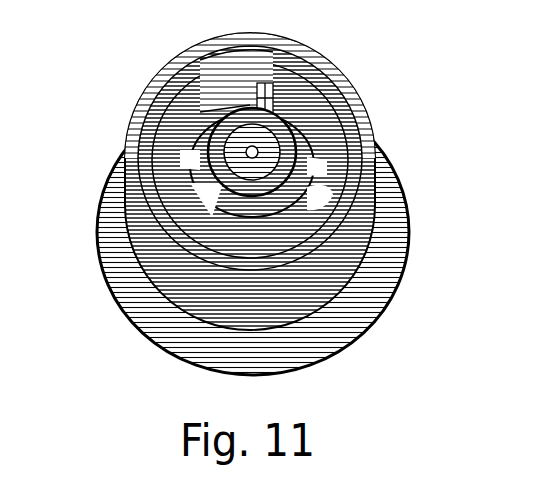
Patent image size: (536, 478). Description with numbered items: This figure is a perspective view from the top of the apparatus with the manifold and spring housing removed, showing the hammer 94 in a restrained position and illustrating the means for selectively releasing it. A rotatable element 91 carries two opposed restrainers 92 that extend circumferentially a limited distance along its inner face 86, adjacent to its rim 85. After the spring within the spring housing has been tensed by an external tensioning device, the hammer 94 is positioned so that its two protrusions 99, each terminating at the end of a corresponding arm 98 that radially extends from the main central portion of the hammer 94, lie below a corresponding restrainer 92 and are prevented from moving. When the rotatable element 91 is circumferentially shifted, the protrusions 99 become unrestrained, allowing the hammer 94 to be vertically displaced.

The rim 85 is at (172, 80).
The inner face 86 is at (175, 123).
The rotatable element 91 is at (353, 243).
The restrainer 92 is at (247, 63).
The hammer 94 is at (293, 137).
The arm 98 is at (247, 215).
The protrusion 99 is at (277, 80).